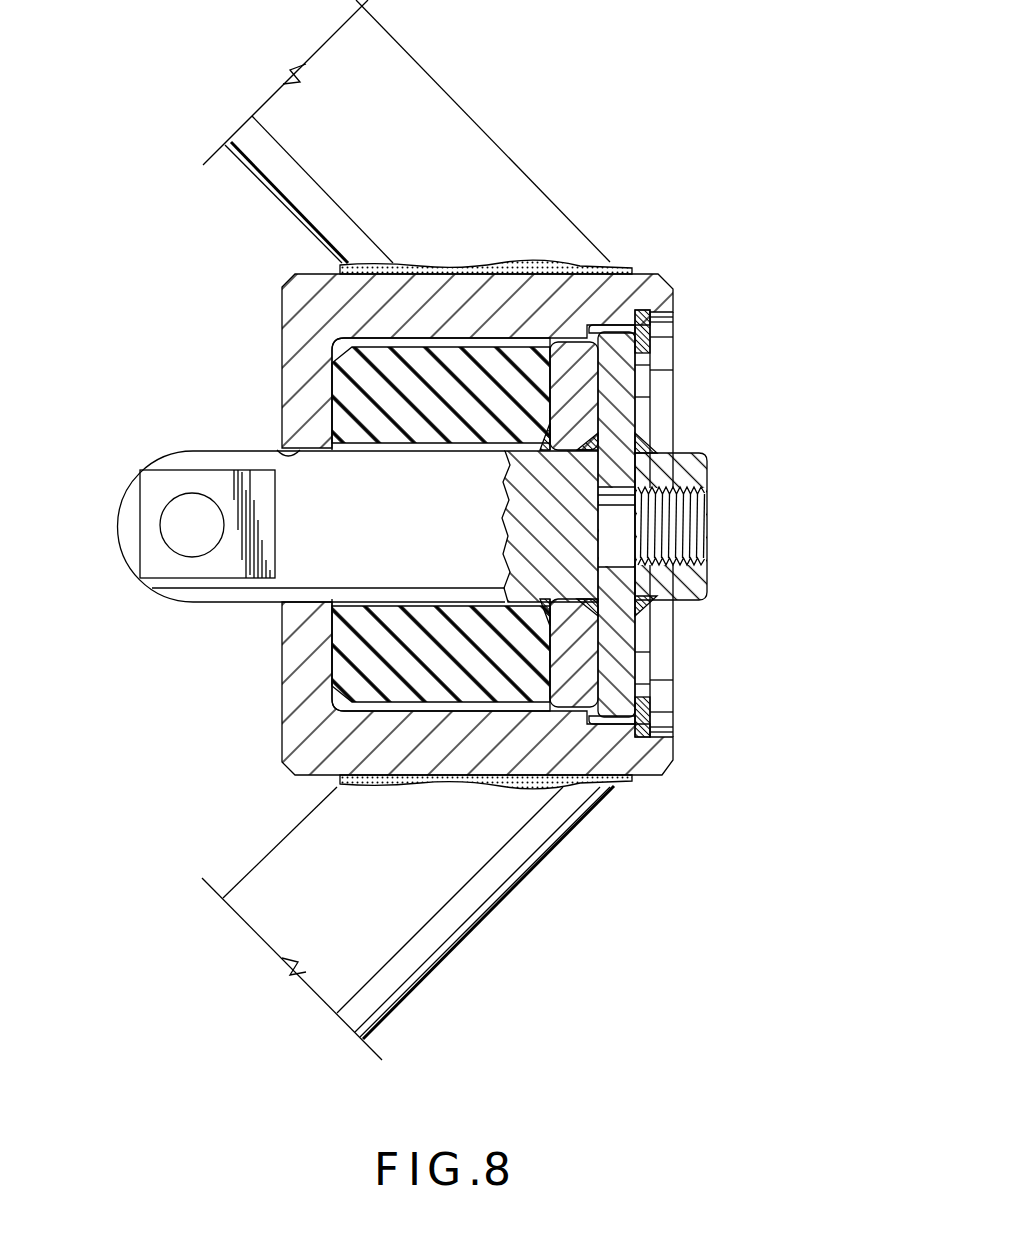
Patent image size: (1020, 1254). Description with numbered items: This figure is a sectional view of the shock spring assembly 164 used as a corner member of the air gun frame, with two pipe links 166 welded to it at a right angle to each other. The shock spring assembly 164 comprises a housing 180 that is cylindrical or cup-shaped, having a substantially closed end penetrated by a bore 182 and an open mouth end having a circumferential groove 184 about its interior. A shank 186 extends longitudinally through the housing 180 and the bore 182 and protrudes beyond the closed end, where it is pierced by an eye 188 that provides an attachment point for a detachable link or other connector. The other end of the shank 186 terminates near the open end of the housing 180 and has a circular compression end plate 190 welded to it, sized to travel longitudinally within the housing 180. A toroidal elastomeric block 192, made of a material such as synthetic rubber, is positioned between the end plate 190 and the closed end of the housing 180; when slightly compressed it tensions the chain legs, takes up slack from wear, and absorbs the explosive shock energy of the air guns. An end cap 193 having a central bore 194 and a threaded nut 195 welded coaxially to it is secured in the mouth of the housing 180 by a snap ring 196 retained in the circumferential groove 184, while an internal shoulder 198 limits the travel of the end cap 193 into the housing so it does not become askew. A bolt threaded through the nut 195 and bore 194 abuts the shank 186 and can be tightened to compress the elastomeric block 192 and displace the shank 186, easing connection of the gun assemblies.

The shock spring assembly 164 is at (223, 293).
The pipe links 166 is at (493, 180).
The housing 180 is at (635, 292).
The bore 182 is at (277, 450).
The circumferential groove 184 is at (673, 318).
The shank 186 is at (315, 560).
The eye 188 is at (220, 532).
The compression end plate 190 is at (577, 417).
The elastomeric block 192 is at (370, 662).
The end cap 193 is at (622, 645).
The central bore 194 is at (618, 567).
The threaded nut 195 is at (690, 472).
The snap ring 196 is at (640, 715).
The internal shoulder 198 is at (600, 723).